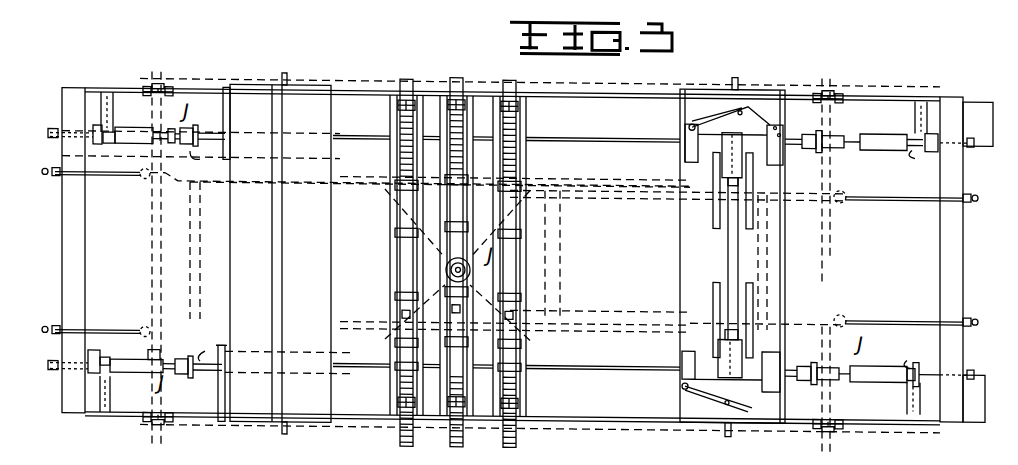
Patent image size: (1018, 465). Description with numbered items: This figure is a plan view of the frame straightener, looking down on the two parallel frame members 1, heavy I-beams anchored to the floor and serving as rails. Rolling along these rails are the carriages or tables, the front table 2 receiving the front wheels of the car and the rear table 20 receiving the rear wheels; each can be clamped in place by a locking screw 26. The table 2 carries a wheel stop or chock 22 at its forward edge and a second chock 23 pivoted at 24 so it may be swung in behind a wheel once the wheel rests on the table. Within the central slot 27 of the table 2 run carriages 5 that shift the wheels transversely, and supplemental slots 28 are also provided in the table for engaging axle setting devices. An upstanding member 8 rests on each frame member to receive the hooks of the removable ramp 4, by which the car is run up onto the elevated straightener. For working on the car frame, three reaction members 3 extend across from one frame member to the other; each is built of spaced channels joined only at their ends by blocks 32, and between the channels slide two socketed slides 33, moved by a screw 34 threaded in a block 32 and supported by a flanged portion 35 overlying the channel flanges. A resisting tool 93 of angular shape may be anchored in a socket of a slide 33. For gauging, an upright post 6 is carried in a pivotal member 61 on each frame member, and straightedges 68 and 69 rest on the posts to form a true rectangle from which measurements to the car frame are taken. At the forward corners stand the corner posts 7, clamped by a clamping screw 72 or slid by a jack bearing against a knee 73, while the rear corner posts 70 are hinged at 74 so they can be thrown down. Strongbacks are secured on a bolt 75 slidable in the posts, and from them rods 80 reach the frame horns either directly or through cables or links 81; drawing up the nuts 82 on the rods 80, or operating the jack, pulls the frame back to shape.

The frame members 1 is at (592, 332).
The table 2 is at (662, 278).
The reaction members 3 is at (390, 151).
The ramp 4 is at (606, 133).
The carriages 5 is at (742, 158).
The upright post 6 is at (159, 85).
The corner posts 7 is at (925, 128).
The upstanding member 8 is at (62, 271).
The rear table 20 is at (331, 258).
The wheel stop or chock 22 is at (792, 128).
The second chock 23 is at (685, 118).
The pivot 24 is at (735, 110).
The locking screw 26 is at (285, 71).
The central slot 27 is at (283, 278).
The supplemental slots 28 is at (713, 168).
The blocks 32 is at (518, 100).
The socketed slides 33 is at (398, 190).
The screw 34 is at (460, 73).
The flanged portion 35 is at (521, 229).
The member 61 is at (160, 423).
The straightedge 68 is at (150, 269).
The straightedges 69 is at (396, 77).
The corner posts 70 is at (102, 142).
The clamping screw 72 is at (198, 358).
The knee 73 is at (206, 128).
The hinge 74 is at (150, 352).
The bolt 75 is at (56, 131).
The rods 80 is at (120, 174).
The cables or links 81 is at (187, 324).
The nuts 82 is at (55, 169).
The resisting tool 93 is at (395, 345).